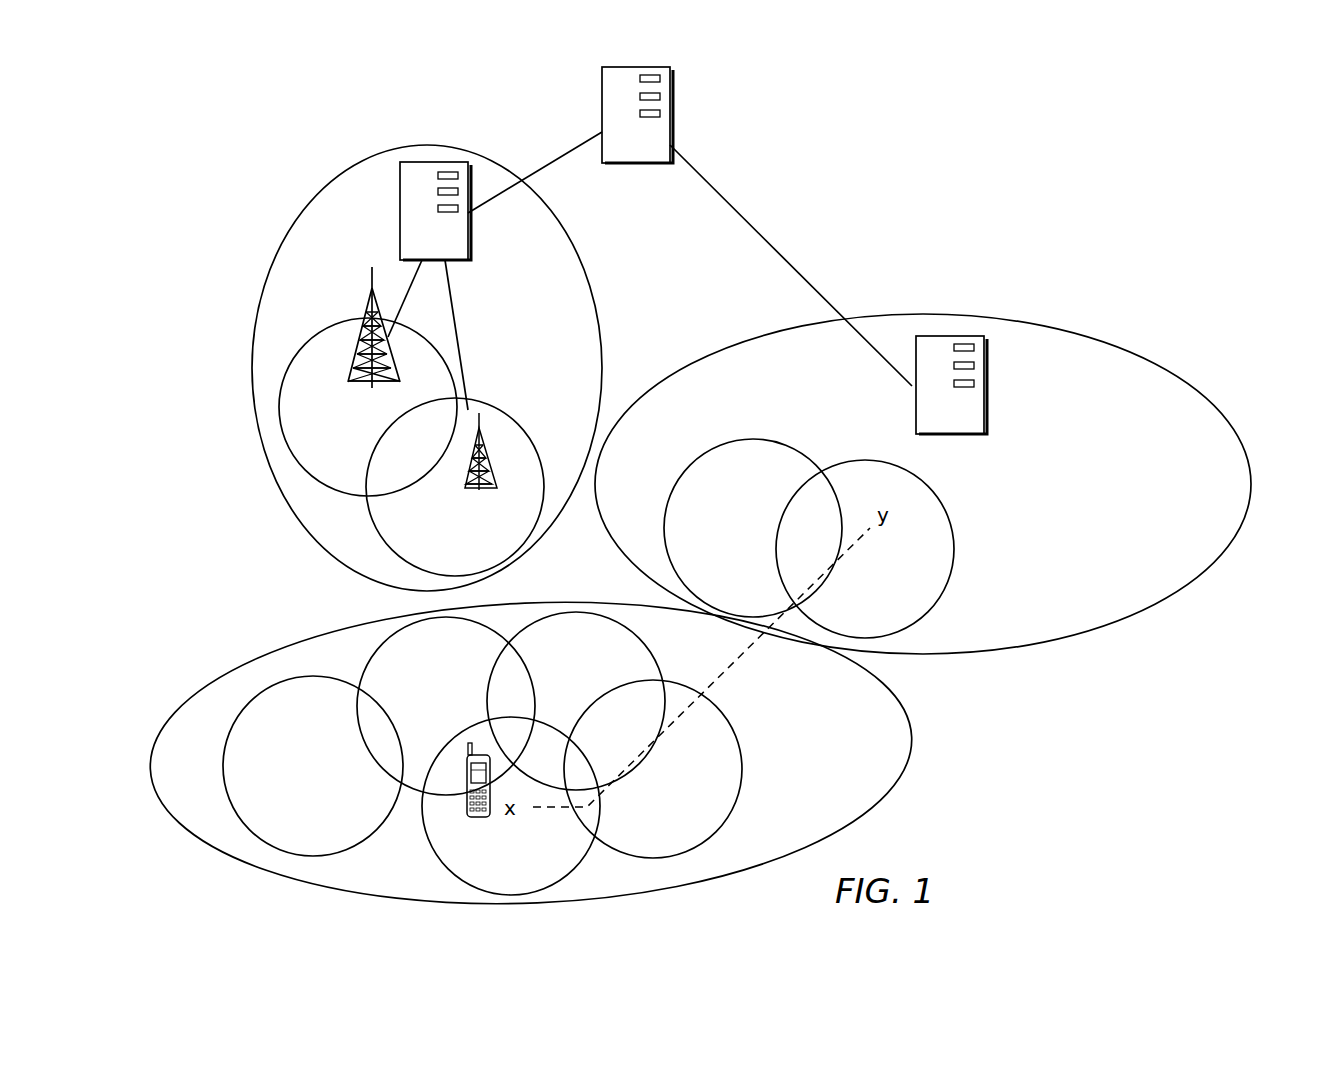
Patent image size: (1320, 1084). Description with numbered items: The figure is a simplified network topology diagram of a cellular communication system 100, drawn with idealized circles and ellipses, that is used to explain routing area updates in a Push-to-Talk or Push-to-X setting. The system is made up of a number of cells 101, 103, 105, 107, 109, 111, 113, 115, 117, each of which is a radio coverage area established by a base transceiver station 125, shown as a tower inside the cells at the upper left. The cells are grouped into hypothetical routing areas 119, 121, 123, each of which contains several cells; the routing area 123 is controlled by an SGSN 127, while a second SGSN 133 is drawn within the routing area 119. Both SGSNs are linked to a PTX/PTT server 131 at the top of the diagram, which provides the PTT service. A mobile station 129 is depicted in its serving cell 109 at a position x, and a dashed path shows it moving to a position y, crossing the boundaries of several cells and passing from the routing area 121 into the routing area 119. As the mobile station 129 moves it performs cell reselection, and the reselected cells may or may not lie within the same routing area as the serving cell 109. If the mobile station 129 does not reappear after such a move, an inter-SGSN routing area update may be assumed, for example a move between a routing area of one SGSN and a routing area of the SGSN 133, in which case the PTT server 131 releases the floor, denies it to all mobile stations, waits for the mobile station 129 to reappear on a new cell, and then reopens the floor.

The cellular communication system 100 is at (693, 290).
The cell 101 is at (314, 421).
The cell 103 is at (438, 534).
The cell 105 is at (410, 691).
The cell 107 is at (273, 811).
The serving cell 109 is at (482, 852).
The cell 111 is at (557, 669).
The cell 113 is at (647, 824).
The cell 115 is at (713, 546).
The cell 117 is at (866, 586).
The routing area 119 is at (1036, 486).
The routing area 121 is at (785, 751).
The routing area 123 is at (480, 317).
The base transceiver station 125 is at (340, 312).
The SGSN 127 is at (410, 185).
The mobile station 129 is at (467, 802).
The PTX/PTT server 131 is at (672, 102).
The SGSN 133 is at (984, 358).